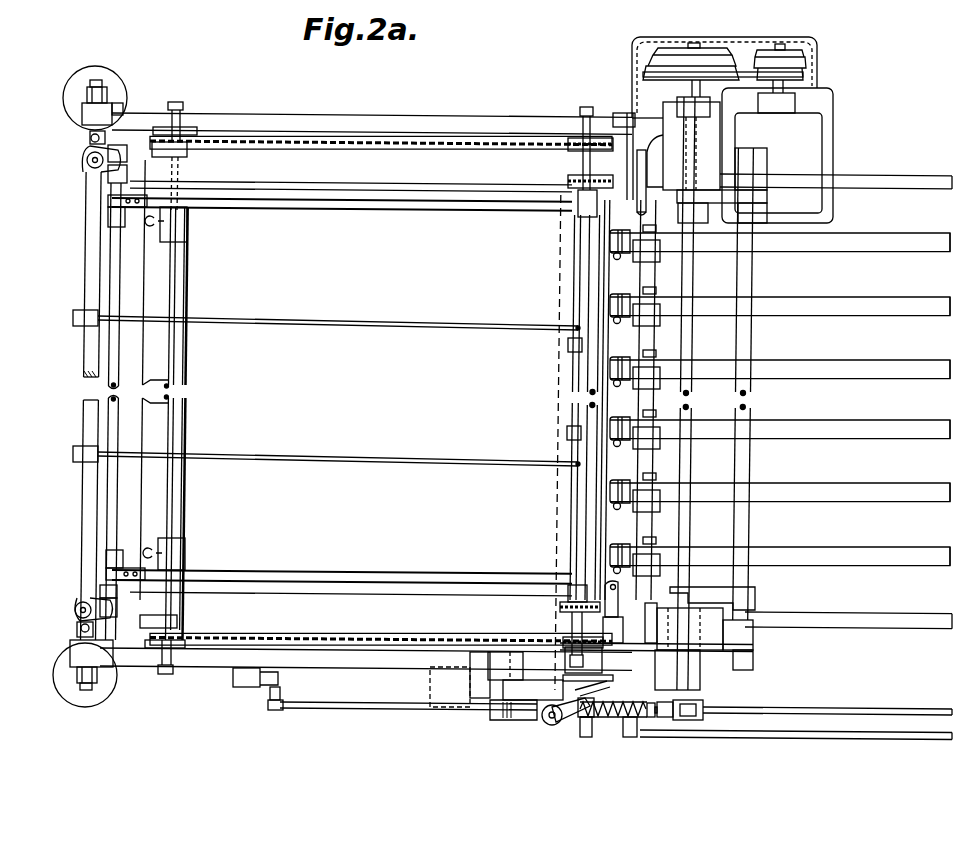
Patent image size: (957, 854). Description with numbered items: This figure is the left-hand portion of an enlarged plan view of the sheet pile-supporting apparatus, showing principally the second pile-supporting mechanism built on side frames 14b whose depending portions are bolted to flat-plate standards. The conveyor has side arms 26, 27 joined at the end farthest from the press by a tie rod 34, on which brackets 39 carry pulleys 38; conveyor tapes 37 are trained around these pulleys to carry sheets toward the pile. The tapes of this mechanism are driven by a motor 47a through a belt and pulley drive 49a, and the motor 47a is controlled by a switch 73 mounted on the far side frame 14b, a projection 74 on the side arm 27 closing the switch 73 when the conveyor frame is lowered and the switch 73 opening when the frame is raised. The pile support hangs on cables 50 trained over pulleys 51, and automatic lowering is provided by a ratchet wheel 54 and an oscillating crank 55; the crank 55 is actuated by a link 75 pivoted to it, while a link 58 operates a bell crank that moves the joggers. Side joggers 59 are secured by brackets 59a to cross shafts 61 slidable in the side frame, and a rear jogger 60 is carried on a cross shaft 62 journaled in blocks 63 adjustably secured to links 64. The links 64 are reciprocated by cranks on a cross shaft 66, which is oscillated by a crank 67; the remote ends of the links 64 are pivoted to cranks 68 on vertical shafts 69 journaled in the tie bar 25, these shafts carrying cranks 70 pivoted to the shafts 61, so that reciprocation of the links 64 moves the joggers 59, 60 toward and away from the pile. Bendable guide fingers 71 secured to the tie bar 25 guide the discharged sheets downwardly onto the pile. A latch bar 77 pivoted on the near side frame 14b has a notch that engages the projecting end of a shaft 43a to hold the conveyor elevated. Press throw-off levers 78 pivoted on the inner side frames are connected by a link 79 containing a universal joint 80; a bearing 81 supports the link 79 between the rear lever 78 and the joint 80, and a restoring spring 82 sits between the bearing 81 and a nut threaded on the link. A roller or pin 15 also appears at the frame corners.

The side frame 14b is at (368, 124).
The roller 15 is at (118, 96).
The tie bar 25 is at (92, 347).
The side arm 26 is at (906, 618).
The side arm 27 is at (918, 180).
The tie rod 34 is at (646, 344).
The conveyor tapes 37 is at (892, 305).
The pulleys 38 is at (630, 290).
The brackets 39 is at (634, 318).
The shaft 43a is at (744, 575).
The motor 47a is at (812, 133).
The belt and pulley drive 49a is at (804, 74).
The cables 50 is at (282, 132).
The pulleys 51 is at (186, 128).
The ratchet wheel 54 is at (662, 718).
The oscillating crank 55 is at (586, 728).
The link 58 is at (645, 718).
The side joggers 59 is at (376, 210).
The brackets 59a is at (112, 204).
The rear jogger 60 is at (170, 486).
The cross shafts 61 is at (110, 258).
The cross shaft 62 is at (176, 421).
The blocks 63 is at (188, 152).
The links 64 is at (285, 140).
The cross shaft 66 is at (620, 592).
The crank 67 is at (575, 684).
The cranks 68 is at (90, 139).
The vertical shafts 69 is at (87, 160).
The cranks 70 is at (108, 170).
The bendable guide fingers 71 is at (370, 323).
The switch 73 is at (690, 160).
The projection 74 is at (637, 191).
The link 75 is at (826, 732).
The latch bar 77 is at (755, 647).
The press throw-off levers 78 is at (284, 680).
The link 79 is at (412, 702).
The universal joint 80 is at (700, 716).
The bearing 81 is at (566, 716).
The restoring spring 82 is at (626, 720).